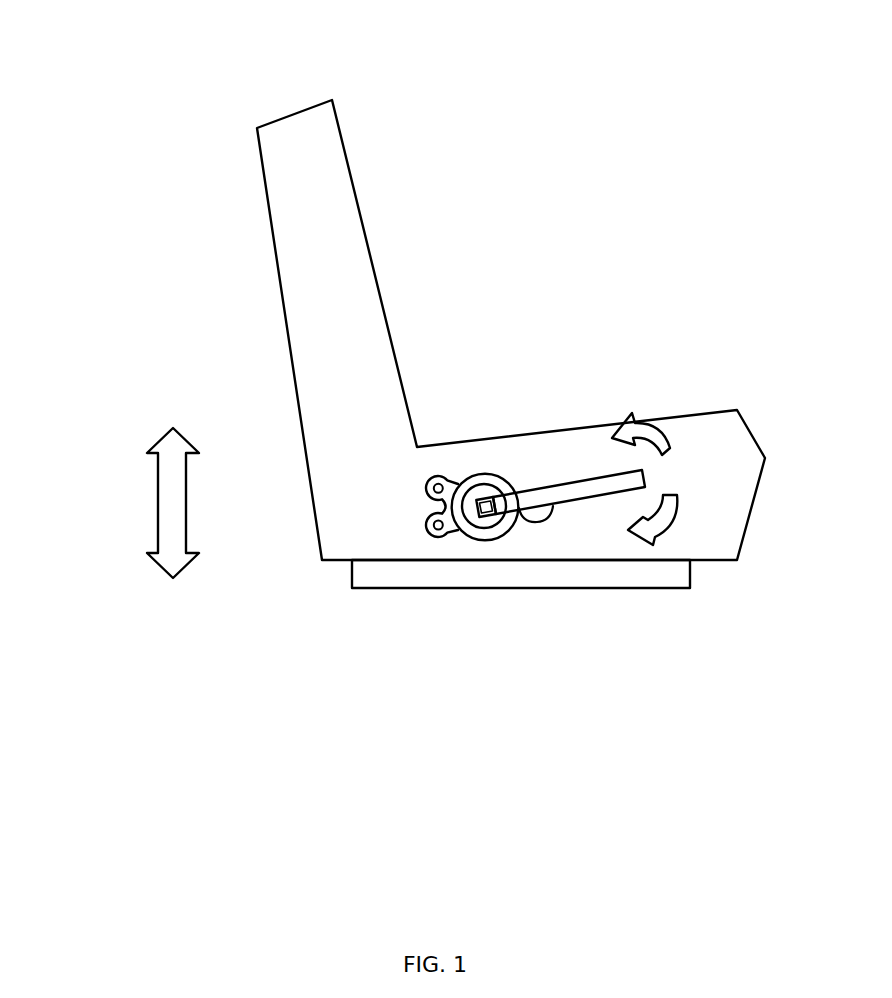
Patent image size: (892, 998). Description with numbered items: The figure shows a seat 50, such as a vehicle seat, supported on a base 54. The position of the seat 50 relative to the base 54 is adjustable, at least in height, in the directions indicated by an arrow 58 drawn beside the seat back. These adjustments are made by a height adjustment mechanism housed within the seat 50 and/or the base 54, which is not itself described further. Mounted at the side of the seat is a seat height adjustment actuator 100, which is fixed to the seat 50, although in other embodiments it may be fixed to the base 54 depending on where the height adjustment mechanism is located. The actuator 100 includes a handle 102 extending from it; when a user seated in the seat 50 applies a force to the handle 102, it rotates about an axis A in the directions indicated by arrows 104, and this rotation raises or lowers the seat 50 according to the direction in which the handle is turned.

The seat 50 is at (288, 115).
The base 54 is at (413, 590).
The arrow 58 is at (158, 502).
The seat height adjustment actuator 100 is at (487, 468).
The handle 102 is at (587, 498).
The arrows 104 is at (650, 424).
The axis A is at (485, 512).